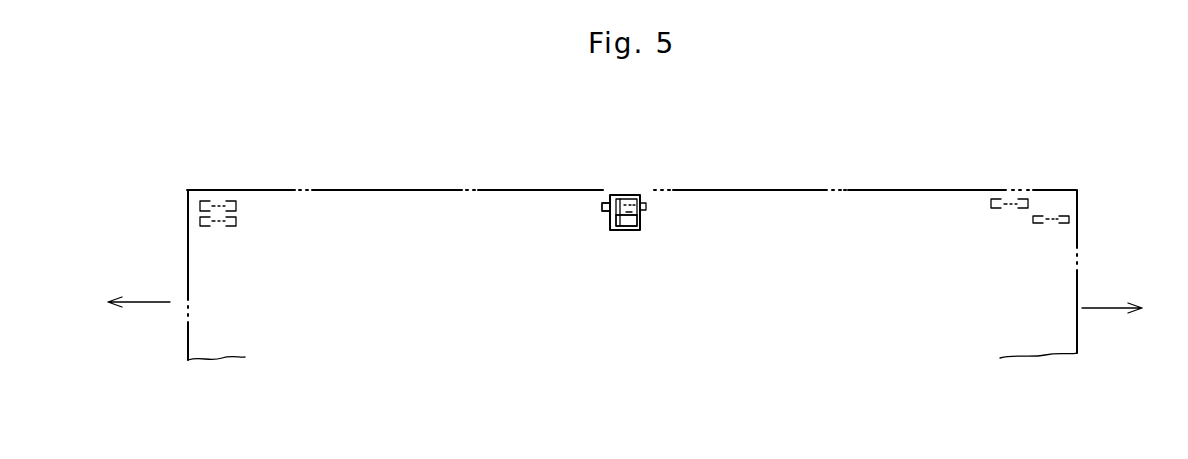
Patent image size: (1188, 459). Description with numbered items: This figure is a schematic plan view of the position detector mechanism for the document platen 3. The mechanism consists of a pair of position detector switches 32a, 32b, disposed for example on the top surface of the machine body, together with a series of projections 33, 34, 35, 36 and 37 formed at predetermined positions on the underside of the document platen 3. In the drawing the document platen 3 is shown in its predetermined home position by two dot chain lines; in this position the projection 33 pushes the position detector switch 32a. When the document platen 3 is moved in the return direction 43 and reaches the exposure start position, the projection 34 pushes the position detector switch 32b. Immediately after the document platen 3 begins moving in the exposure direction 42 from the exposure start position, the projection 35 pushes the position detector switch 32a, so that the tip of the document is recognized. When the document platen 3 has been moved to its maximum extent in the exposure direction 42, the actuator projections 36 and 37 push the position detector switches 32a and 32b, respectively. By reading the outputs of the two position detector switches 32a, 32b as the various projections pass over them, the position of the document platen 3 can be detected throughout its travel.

The document platen 3 is at (875, 188).
The position detector switch 32a is at (638, 194).
The position detector switch 32b is at (640, 230).
The projection 33 is at (611, 202).
The projection 34 is at (1043, 223).
The projection 35 is at (1002, 198).
The actuator projection 36 is at (222, 201).
The actuator projection 37 is at (230, 226).
The exposure direction 42 is at (1113, 310).
The return direction 43 is at (138, 303).